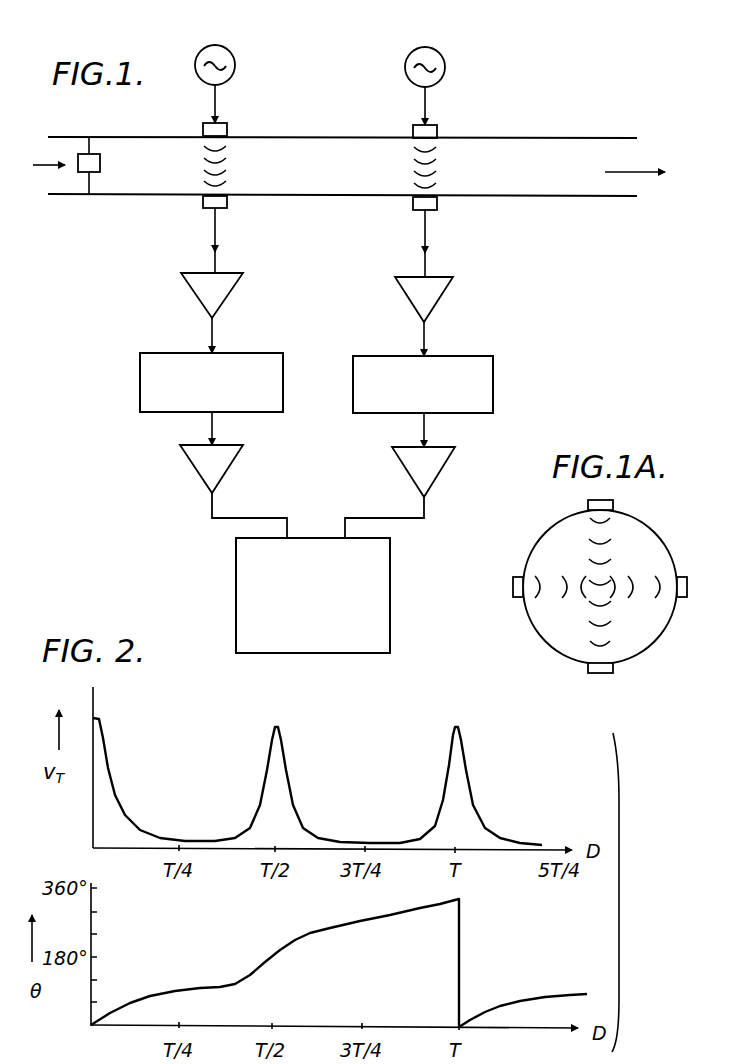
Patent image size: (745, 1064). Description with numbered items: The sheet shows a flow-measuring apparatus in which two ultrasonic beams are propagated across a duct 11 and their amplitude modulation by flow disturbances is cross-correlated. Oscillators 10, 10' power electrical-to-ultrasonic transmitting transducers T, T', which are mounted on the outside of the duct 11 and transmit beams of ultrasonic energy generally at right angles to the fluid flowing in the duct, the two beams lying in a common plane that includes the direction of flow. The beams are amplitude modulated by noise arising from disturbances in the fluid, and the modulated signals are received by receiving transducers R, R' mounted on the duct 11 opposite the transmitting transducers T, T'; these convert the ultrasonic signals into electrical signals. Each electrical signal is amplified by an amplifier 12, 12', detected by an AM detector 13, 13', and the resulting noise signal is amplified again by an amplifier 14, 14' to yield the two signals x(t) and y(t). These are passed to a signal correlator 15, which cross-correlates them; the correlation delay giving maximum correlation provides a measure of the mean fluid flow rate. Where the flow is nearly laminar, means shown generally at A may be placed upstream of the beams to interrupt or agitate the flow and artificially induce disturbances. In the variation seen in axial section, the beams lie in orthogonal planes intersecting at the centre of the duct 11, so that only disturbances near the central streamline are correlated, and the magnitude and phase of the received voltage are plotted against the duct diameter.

In FIG. 1, the oscillator 10 is at (231, 84).
In FIG. 1, the oscillator 10' is at (446, 86).
In FIG. 1, the duct 11 is at (587, 128).
In FIG. 1A, the duct 11 is at (660, 558).
In FIG. 1, the amplifier 12 is at (228, 313).
In FIG. 1, the amplifier 12' is at (444, 316).
In FIG. 1, the AM detector 13 is at (230, 399).
In FIG. 1, the AM detector 13' is at (445, 401).
In FIG. 1, the amplifier 14 is at (233, 491).
In FIG. 1, the amplifier 14' is at (418, 492).
In FIG. 1, the signal correlator 15 is at (390, 606).
In FIG. 1, the transmitting transducer T is at (229, 143).
In FIG. 1A, the transmitting transducer T is at (579, 500).
In FIG. 1, the transmitting transducer T' is at (441, 146).
In FIG. 1A, the transmitting transducer T' is at (506, 605).
In FIG. 1, the receiving transducer R is at (230, 234).
In FIG. 1A, the receiving transducer R is at (582, 678).
In FIG. 1, the receiving transducer R' is at (439, 237).
In FIG. 1A, the receiving transducer R' is at (673, 618).
In FIG. 1, the flow-disturbing means A is at (100, 165).